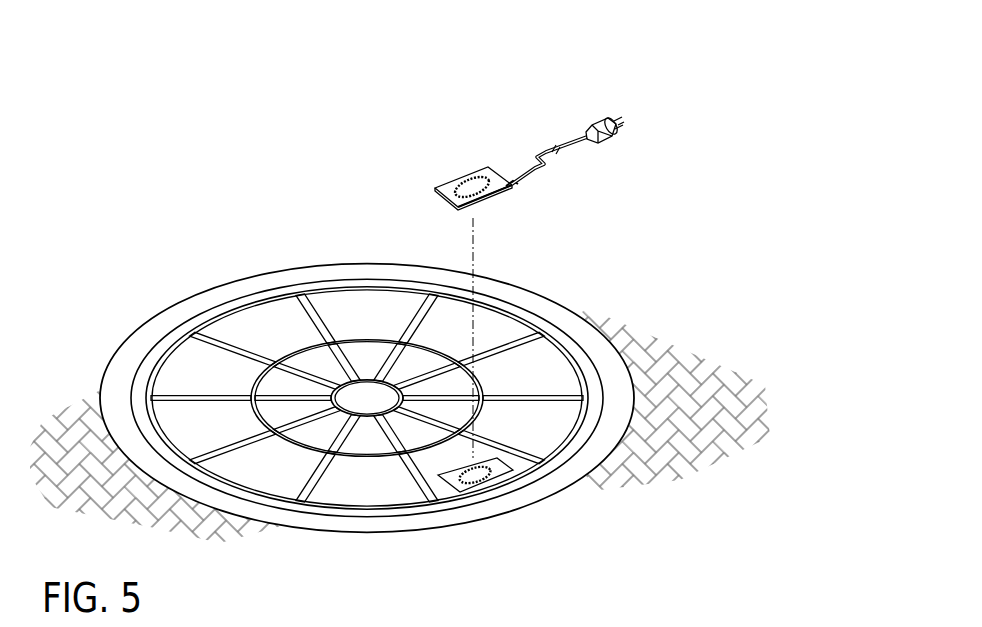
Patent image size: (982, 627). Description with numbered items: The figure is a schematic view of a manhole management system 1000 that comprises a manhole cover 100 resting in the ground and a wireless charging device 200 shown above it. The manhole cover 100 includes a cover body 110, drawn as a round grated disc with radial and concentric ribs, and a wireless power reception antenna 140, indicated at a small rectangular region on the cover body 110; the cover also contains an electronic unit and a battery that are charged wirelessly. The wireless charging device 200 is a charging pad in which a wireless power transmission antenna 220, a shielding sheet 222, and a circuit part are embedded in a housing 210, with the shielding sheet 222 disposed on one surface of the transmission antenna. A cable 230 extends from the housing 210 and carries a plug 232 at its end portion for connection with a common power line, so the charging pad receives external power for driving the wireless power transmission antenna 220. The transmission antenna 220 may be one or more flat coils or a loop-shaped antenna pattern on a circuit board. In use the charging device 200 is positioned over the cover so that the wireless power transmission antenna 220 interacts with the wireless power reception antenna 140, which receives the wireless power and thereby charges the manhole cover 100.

The manhole management system 1000 is at (212, 90).
The manhole cover 100 is at (218, 282).
The cover body 110 is at (357, 308).
The wireless power reception antenna 140 is at (500, 474).
The wireless charging device 200 is at (470, 120).
The housing 210 is at (447, 183).
The wireless power transmission antenna 220 is at (495, 193).
The shielding sheet 222 is at (512, 181).
The cable 230 is at (540, 153).
The plug 232 is at (603, 120).